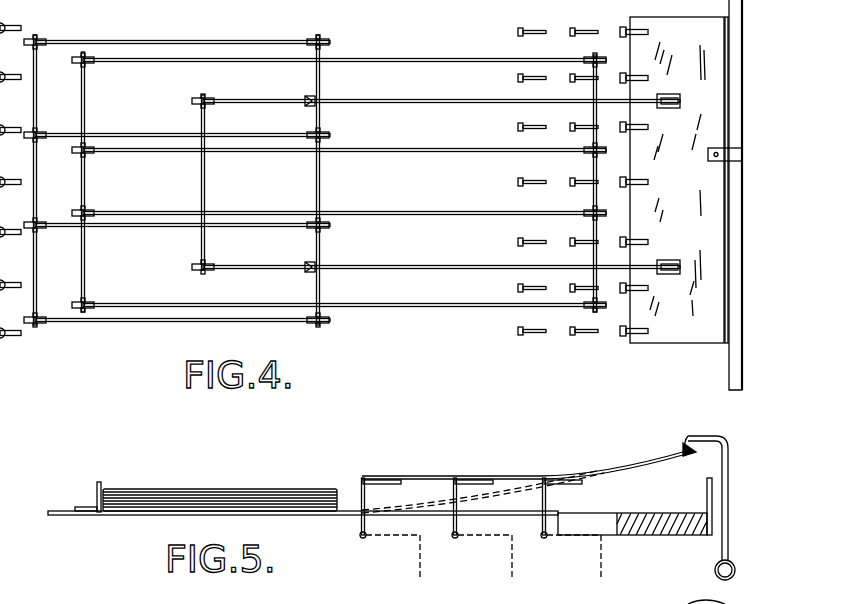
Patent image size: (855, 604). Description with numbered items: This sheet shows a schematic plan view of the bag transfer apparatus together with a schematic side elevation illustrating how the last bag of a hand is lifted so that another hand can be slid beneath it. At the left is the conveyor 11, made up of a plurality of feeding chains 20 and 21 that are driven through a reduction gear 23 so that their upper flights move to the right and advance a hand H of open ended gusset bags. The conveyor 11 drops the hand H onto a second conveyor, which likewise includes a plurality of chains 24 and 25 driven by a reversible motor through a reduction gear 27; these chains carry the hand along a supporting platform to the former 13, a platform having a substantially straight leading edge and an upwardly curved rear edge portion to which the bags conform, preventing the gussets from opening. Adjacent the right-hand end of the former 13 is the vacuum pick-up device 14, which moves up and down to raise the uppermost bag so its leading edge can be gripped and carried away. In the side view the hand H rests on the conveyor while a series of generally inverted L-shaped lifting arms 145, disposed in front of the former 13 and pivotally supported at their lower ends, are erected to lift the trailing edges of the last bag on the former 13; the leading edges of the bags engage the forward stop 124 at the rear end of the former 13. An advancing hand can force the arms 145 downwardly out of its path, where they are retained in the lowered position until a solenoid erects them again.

In FIG. 4, the conveyor 11 is at (237, 39).
In FIG. 4, the former 13 is at (691, 336).
In FIG. 5, the former 13 is at (674, 527).
In FIG. 4, the vacuum pick-up device 14 is at (750, 131).
In FIG. 5, the vacuum pick-up device 14 is at (735, 511).
In FIG. 4, the feeding chain 20 is at (162, 62).
In FIG. 4, the feeding chain 21 is at (147, 228).
In FIG. 4, the reduction gear 23 is at (107, 156).
In FIG. 4, the chain 24 is at (424, 102).
In FIG. 4, the chain 25 is at (430, 215).
In FIG. 4, the reduction gear 27 is at (207, 135).
In FIG. 4, the lifting arm 145 is at (522, 78).
In FIG. 5, the lifting arm 145 is at (467, 481).
In FIG. 5, the hand of bags H is at (240, 488).
In FIG. 5, the forward stop 124 is at (705, 485).